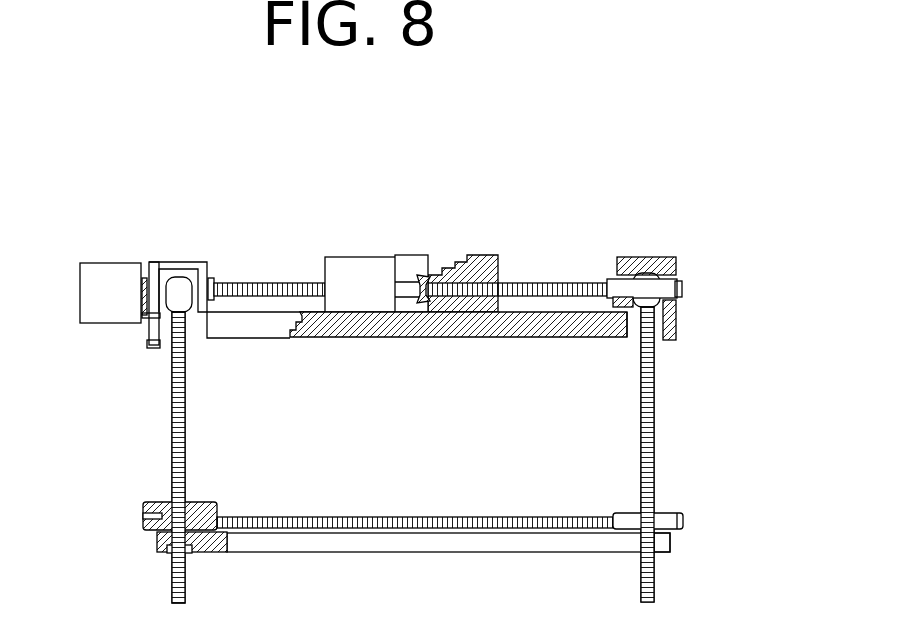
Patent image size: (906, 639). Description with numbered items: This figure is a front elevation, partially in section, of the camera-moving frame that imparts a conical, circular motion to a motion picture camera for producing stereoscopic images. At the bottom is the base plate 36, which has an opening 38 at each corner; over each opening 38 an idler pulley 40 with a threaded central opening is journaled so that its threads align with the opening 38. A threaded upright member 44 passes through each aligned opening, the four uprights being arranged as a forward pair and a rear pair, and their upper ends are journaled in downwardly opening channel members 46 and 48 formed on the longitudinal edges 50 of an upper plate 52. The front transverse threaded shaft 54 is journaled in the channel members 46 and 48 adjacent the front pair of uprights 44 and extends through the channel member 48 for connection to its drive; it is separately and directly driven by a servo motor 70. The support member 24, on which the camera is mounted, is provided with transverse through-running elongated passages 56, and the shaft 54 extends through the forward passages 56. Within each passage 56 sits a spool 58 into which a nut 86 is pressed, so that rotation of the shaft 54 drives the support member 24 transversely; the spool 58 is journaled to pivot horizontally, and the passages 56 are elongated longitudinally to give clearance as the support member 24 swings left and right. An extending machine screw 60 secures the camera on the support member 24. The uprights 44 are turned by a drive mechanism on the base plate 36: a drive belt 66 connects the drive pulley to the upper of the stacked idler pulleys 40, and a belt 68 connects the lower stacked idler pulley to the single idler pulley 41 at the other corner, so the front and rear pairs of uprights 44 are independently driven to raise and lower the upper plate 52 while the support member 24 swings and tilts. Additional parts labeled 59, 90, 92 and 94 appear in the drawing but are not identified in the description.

The support member 24 is at (445, 262).
The base plate 36 is at (412, 552).
The opening 38 is at (160, 533).
The idler pulley 40 is at (217, 517).
The single idler pulley 41 is at (620, 513).
The threaded upright member 44 is at (185, 422).
The channel member 46 is at (675, 257).
The channel member 48 is at (165, 262).
The longitudinal edge 50 is at (630, 337).
The upper plate 52 is at (517, 337).
The front transverse threaded shaft 54 is at (548, 283).
The elongated passage 56 is at (507, 337).
The spool 58 is at (410, 255).
The washer 59 is at (208, 278).
The machine screw 60 is at (503, 632).
The drive belt 66 is at (143, 502).
The belt 68 is at (505, 517).
The servo motor 70 is at (118, 263).
The nut 86 is at (328, 257).
The yoke 90 is at (178, 288).
The mounting bracket 92 is at (155, 340).
The pin 94 is at (197, 547).